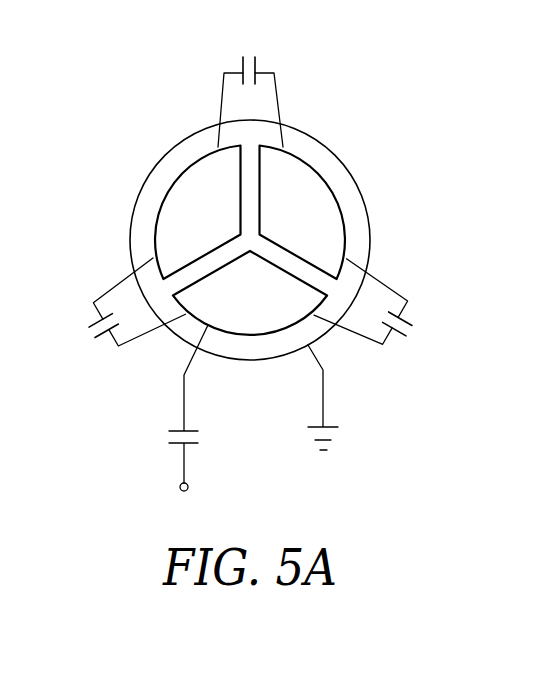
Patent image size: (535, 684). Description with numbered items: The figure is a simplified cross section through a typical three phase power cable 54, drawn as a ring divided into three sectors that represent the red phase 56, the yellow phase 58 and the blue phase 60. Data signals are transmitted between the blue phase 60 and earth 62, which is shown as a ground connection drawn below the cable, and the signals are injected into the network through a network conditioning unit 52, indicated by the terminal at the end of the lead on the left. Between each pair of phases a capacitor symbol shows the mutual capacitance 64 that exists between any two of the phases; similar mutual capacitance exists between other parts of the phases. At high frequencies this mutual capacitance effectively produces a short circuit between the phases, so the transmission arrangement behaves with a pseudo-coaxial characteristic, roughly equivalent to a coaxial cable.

The network conditioning unit 52 is at (180, 487).
The three phase power cable 54 is at (362, 123).
The red phase 56 is at (177, 182).
The yellow phase 58 is at (328, 178).
The blue phase 60 is at (250, 335).
The earth 62 is at (337, 425).
The mutual capacitance 64 is at (250, 50).